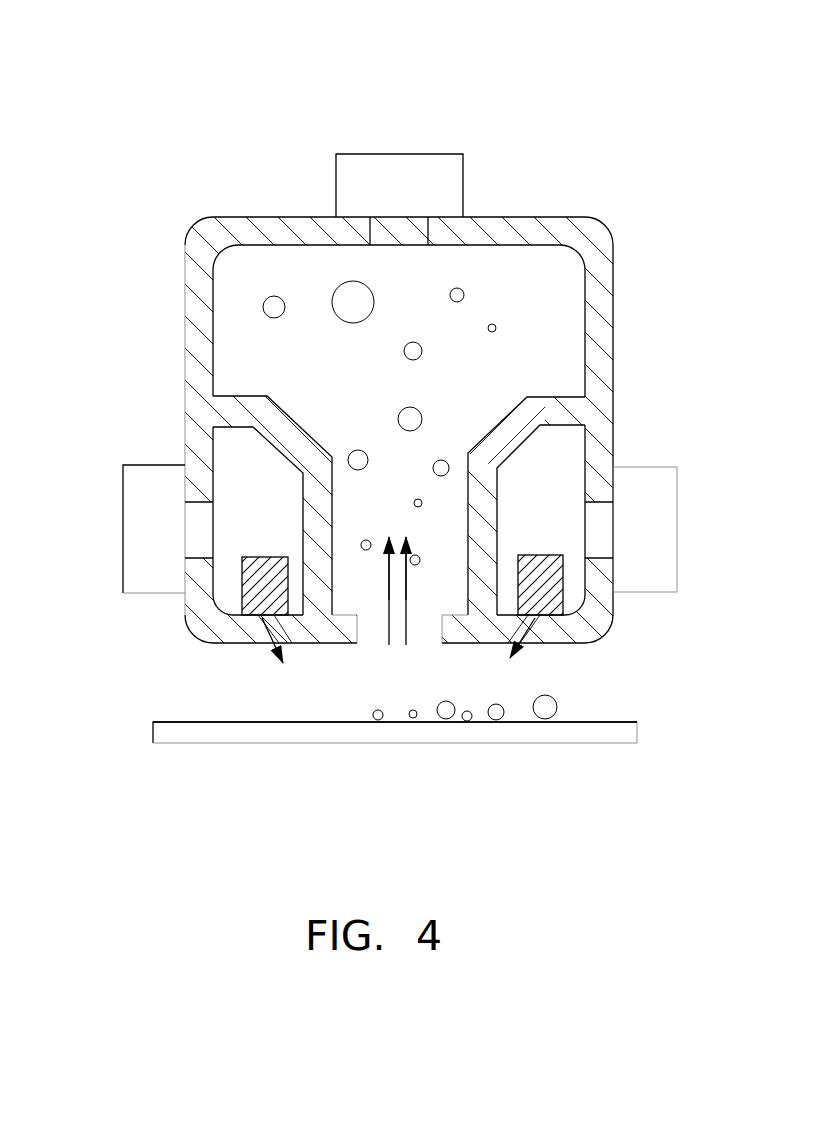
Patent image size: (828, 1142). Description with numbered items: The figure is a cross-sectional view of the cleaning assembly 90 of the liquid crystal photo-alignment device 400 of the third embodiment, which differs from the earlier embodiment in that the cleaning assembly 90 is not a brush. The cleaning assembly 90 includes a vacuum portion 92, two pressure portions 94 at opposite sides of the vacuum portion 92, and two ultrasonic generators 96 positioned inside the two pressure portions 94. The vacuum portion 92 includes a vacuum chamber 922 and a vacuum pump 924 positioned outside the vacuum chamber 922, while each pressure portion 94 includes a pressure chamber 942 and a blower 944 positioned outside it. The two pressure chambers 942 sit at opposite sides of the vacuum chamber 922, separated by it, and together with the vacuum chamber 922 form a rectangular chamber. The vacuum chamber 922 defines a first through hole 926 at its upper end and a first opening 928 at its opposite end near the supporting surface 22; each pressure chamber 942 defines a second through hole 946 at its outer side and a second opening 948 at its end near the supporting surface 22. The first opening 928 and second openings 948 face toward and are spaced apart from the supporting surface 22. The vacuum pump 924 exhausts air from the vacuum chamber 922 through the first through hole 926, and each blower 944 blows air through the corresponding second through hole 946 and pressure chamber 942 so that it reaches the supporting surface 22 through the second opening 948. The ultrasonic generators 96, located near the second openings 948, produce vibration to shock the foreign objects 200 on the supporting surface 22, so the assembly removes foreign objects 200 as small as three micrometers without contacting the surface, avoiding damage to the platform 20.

The liquid crystal photo-alignment device 400 is at (388, 56).
The cleaning assembly 90 is at (597, 287).
The vacuum portion 92 is at (185, 98).
The vacuum chamber 922 is at (290, 228).
The vacuum pump 924 is at (345, 163).
The first through hole 926 is at (405, 232).
The pressure portion 94 is at (106, 370).
The pressure chamber 942 is at (202, 458).
The blower 944 is at (170, 492).
The second through hole 946 is at (192, 537).
The second opening 948 is at (268, 646).
The ultrasonic generator 96 is at (540, 582).
The first opening 928 is at (422, 632).
The supporting surface 22 is at (580, 722).
The platform 20 is at (600, 733).
The foreign objects 200 is at (490, 722).